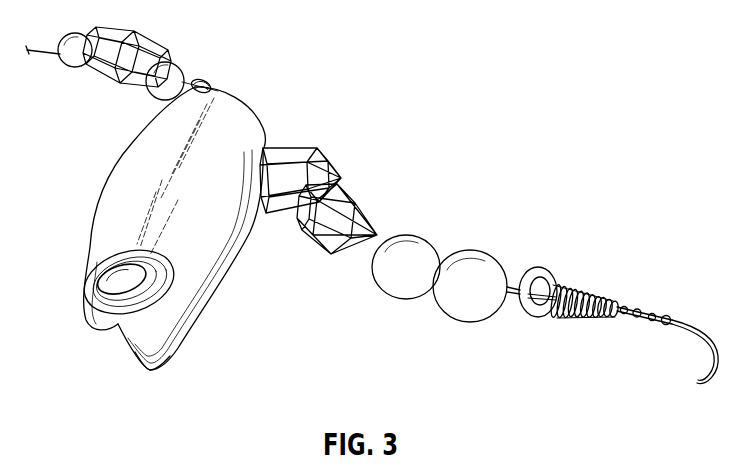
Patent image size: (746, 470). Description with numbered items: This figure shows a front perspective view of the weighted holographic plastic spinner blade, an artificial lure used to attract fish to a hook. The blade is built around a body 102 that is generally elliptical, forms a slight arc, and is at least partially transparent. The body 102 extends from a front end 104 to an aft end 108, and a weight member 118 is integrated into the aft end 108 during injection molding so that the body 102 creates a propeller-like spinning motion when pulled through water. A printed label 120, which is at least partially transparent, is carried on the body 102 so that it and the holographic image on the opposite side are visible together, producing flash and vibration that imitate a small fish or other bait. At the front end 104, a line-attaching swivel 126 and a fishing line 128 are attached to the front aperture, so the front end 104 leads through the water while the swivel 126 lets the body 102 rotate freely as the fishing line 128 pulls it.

The body 102 is at (246, 89).
The front end 104 is at (211, 84).
The aft end 108 is at (150, 370).
The weight member 118 is at (118, 268).
The printed label 120 is at (125, 155).
The line-attaching swivel 126 is at (588, 282).
The fishing line 128 is at (378, 240).